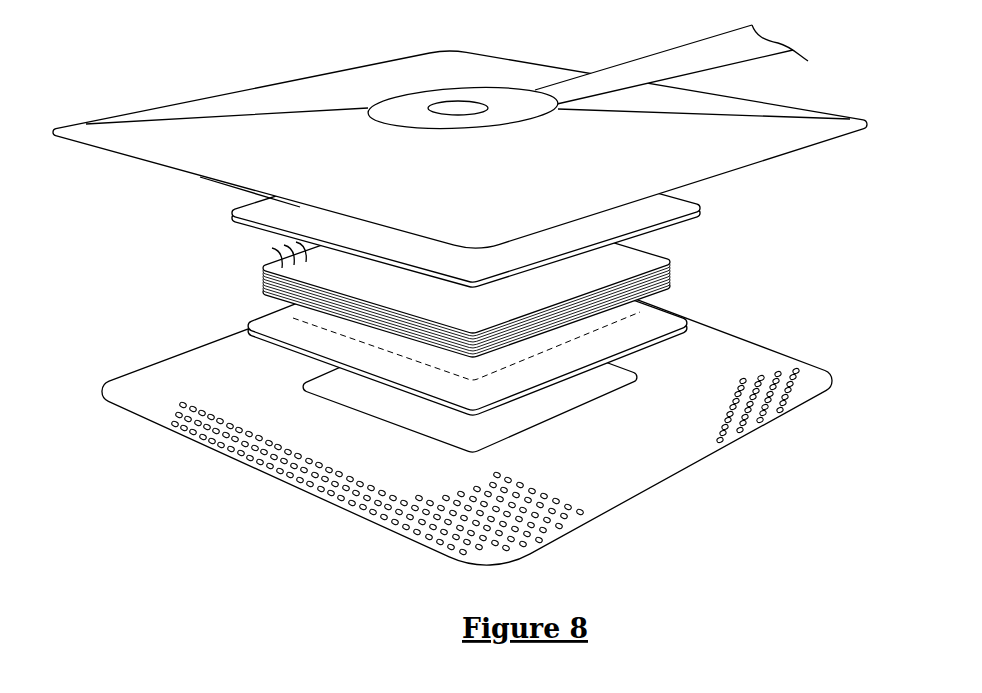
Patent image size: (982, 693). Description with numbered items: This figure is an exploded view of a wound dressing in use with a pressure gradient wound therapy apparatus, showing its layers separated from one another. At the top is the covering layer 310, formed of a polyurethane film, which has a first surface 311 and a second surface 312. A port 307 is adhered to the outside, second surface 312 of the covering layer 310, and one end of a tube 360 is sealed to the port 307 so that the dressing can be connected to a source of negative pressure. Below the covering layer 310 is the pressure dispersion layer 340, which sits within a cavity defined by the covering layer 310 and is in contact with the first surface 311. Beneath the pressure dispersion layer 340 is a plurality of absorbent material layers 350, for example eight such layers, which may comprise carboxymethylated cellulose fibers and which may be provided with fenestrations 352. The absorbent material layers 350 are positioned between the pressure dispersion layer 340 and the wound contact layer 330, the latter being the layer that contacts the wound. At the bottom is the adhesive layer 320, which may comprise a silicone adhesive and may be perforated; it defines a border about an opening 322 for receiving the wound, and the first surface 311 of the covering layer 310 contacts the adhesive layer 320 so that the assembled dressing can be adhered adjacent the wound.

The port 307 is at (454, 104).
The covering layer 310 is at (460, 149).
The first surface 311 is at (126, 160).
The second surface 312 is at (221, 106).
The adhesive layer 320 is at (467, 403).
The opening 322 is at (429, 428).
The wound contact layer 330 is at (637, 341).
The pressure dispersion layer 340 is at (650, 213).
The absorbent material layers 350 is at (645, 262).
The fenestrations 352 is at (270, 247).
The tube 360 is at (711, 50).